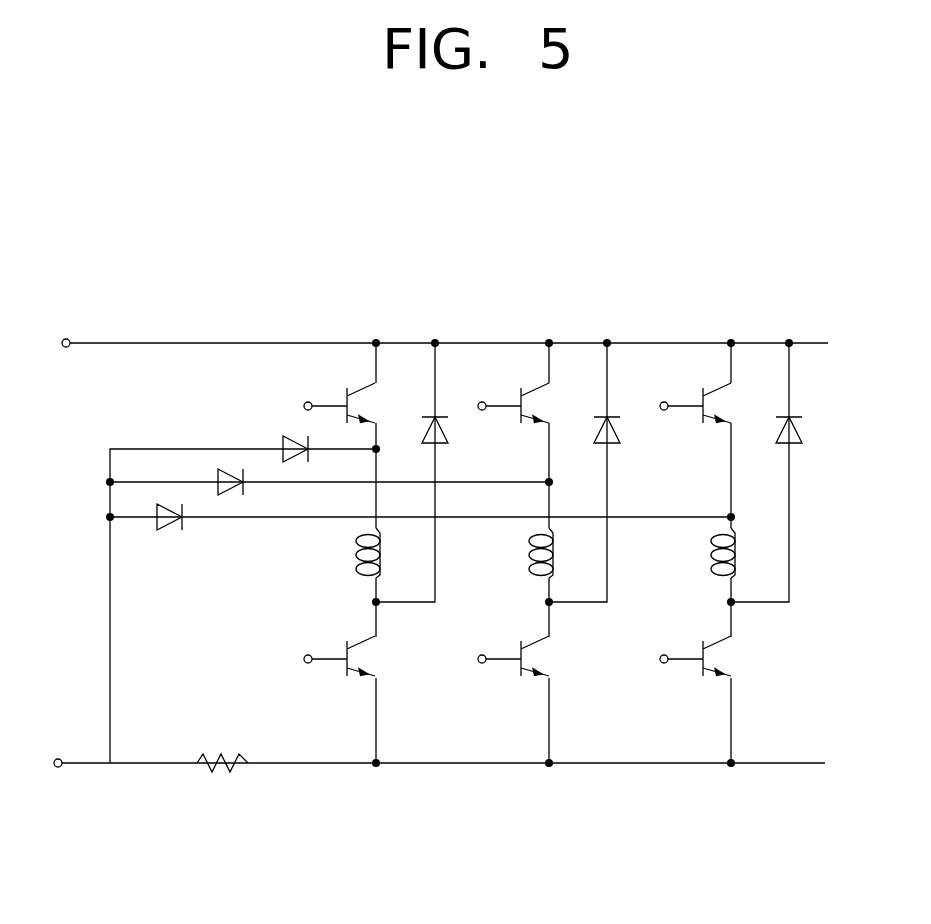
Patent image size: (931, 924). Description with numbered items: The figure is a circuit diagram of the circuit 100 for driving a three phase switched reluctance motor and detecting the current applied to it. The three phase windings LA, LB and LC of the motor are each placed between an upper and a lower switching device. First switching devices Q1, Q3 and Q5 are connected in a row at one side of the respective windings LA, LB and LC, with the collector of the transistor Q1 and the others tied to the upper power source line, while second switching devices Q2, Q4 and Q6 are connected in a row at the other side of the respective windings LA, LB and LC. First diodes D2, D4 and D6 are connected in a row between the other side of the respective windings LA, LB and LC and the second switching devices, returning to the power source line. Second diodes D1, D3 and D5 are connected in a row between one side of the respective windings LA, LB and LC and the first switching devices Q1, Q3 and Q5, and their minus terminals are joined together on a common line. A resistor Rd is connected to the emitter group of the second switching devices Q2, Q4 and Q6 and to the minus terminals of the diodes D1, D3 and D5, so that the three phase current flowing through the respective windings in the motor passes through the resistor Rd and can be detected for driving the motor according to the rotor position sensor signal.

The circuit 100 is at (476, 785).
The first switching device Q1 is at (355, 403).
The second switching device Q2 is at (355, 656).
The first switching device Q3 is at (528, 403).
The second switching device Q4 is at (528, 656).
The first switching device Q5 is at (714, 403).
The second switching device Q6 is at (710, 656).
The second diode D1 is at (282, 440).
The first diode D2 is at (450, 443).
The second diode D3 is at (213, 473).
The first diode D4 is at (620, 444).
The second diode D5 is at (153, 508).
The first diode D6 is at (802, 444).
The winding LA is at (384, 553).
The winding LB is at (557, 553).
The winding LC is at (740, 553).
The resistor Rd is at (222, 746).